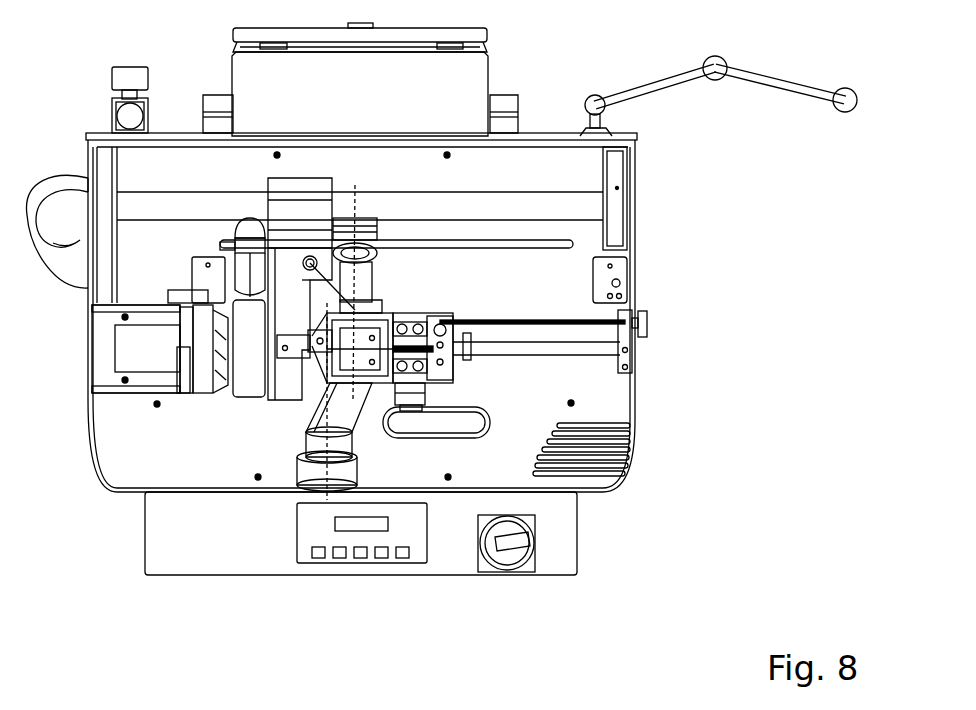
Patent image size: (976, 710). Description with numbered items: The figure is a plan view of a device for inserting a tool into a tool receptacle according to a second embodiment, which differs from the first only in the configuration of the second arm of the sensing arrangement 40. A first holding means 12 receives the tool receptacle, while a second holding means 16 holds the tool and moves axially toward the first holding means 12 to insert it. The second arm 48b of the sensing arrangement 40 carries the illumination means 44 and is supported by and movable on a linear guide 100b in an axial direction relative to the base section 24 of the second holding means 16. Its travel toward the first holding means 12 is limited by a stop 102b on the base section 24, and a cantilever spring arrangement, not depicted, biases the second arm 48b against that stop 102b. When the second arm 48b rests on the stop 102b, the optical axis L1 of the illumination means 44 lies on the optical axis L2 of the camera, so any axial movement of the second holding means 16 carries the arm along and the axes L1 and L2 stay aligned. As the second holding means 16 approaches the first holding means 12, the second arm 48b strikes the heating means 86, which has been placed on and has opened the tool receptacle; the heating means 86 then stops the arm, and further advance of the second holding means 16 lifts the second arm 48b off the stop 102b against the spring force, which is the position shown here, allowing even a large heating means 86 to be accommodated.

The first holding means 12 is at (200, 397).
The second holding means 16 is at (452, 395).
The base section 24 is at (465, 377).
The sensing arrangement 40 is at (295, 455).
The illumination means 44 is at (378, 257).
The second arm 48b is at (342, 306).
The heating means 86 is at (283, 390).
The linear guide 100b is at (400, 313).
The stop 102b is at (393, 316).
The optical axis of the illumination means L1 is at (356, 202).
The optical axis of the camera L2 is at (327, 490).